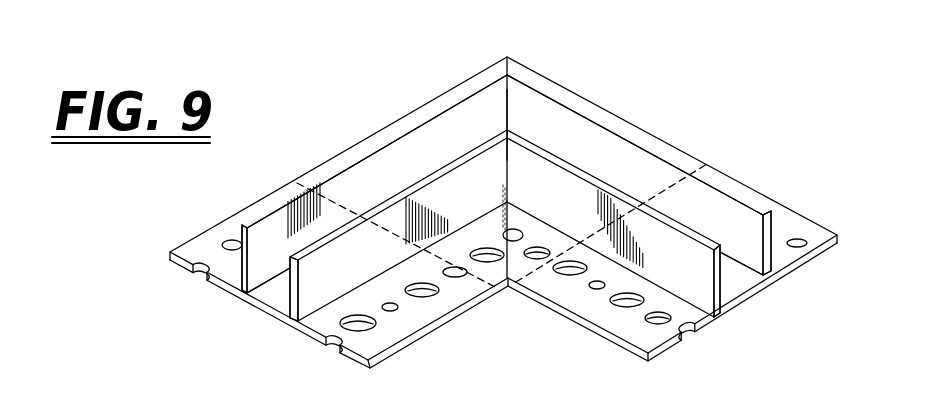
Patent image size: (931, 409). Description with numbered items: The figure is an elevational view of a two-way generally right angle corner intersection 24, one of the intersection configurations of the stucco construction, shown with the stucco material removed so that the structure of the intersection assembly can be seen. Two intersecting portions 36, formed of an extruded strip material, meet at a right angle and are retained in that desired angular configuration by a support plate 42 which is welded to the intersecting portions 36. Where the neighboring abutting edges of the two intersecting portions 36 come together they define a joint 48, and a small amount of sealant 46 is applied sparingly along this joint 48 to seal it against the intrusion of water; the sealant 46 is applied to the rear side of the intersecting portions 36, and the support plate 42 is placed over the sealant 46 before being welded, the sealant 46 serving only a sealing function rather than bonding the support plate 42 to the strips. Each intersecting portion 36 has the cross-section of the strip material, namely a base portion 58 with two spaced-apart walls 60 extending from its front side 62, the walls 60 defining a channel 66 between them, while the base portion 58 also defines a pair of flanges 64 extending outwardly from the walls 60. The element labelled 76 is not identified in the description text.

The two-way right angle corner intersection 24 is at (515, 356).
The intersecting portions 36 is at (202, 186).
The support plate 42 is at (508, 288).
The sealant 46 is at (511, 63).
The joint 48 is at (506, 106).
The base portion 58 is at (267, 324).
The walls 60 is at (250, 282).
The front side 62 is at (398, 126).
The flanges 64 is at (331, 157).
The channel 66 is at (610, 167).
The wall end edge 76 is at (280, 207).